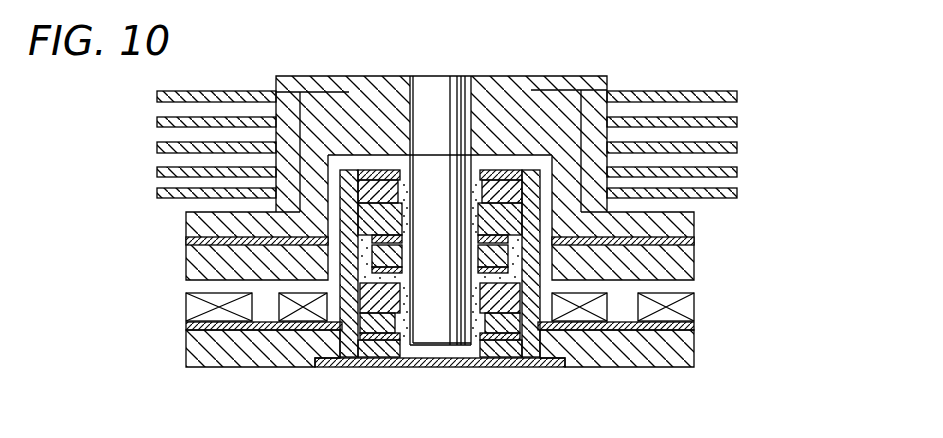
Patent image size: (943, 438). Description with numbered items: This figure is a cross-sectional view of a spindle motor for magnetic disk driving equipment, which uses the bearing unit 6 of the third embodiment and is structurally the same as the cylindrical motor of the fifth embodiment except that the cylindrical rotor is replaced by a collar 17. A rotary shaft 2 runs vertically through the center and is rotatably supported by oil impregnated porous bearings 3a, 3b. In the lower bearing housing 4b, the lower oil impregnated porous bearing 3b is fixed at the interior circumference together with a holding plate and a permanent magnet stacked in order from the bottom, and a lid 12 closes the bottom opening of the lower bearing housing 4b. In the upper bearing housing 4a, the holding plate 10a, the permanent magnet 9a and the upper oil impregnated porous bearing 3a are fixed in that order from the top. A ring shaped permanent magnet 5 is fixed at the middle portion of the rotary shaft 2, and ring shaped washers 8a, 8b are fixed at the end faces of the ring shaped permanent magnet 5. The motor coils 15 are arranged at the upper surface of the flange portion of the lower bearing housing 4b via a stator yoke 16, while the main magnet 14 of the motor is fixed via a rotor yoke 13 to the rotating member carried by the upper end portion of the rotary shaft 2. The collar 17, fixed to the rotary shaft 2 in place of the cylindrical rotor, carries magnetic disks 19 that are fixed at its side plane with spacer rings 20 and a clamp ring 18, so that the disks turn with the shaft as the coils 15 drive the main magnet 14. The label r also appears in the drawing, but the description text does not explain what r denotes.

The rotary shaft 2 is at (430, 88).
The oil impregnated porous bearing 3a is at (620, 226).
The oil impregnated porous bearing 3b is at (365, 340).
The upper bearing housing 4a is at (429, 145).
The lower bearing housing 4b is at (700, 345).
The ring shaped permanent magnet 5 is at (200, 241).
The bearing unit 6 is at (447, 220).
The ring shaped washer 8a is at (528, 345).
The ring shaped washer 8b is at (343, 350).
The permanent magnet 9a is at (366, 172).
The holding plate 10a is at (380, 190).
The lid 12 is at (443, 360).
The rotor yoke 13 is at (640, 241).
The main magnet 14 is at (195, 258).
The coils 15 is at (195, 303).
The stator yoke 16 is at (200, 323).
The collar 17 is at (500, 86).
The clamp ring 18 is at (558, 82).
The magnetic disks 19 is at (663, 88).
The spacer rings 20 is at (622, 92).
The radial gap r is at (535, 262).